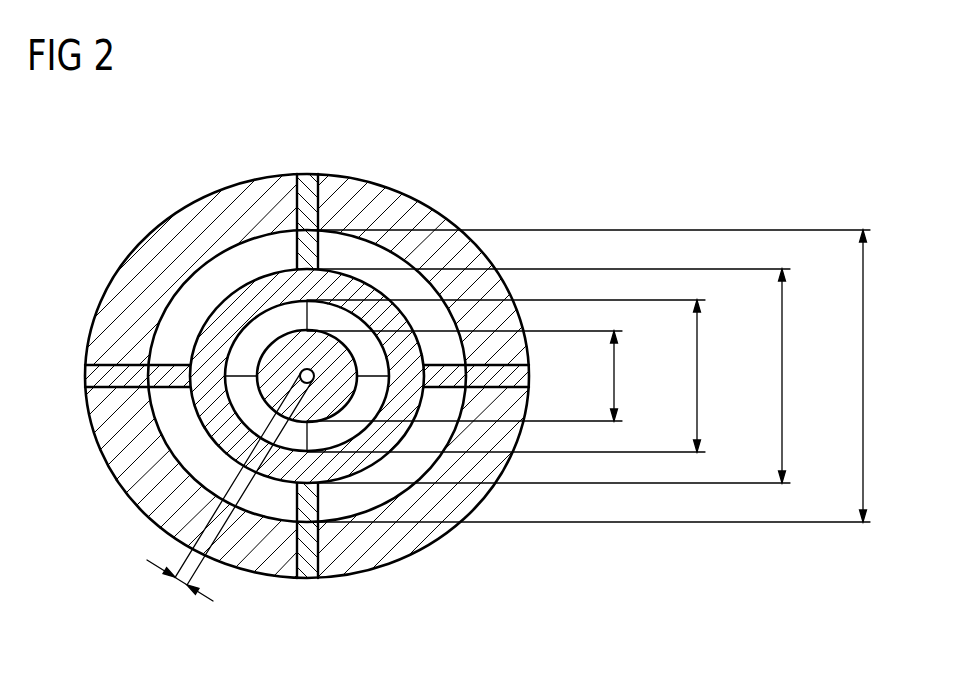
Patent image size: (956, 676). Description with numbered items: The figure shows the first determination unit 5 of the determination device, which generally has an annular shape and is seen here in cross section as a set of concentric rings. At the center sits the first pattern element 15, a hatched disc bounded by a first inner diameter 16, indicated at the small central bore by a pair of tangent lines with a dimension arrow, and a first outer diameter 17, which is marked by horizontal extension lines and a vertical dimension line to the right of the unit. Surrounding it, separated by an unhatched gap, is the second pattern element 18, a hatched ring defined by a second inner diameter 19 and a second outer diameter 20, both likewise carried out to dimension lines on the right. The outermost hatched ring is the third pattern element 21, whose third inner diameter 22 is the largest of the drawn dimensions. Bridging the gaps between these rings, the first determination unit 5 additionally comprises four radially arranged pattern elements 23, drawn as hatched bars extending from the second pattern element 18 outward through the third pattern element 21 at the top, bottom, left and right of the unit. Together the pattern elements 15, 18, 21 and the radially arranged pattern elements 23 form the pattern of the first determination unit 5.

The first determination unit 5 is at (306, 356).
The first pattern element 15 is at (283, 352).
The first inner diameter 16 is at (179, 588).
The first outer diameter 17 is at (614, 377).
The second pattern element 18 is at (213, 335).
The second inner diameter 19 is at (697, 365).
The second outer diameter 20 is at (782, 393).
The third pattern element 21 is at (250, 188).
The third inner diameter 22 is at (863, 370).
The radially arranged pattern elements 23 is at (309, 175).